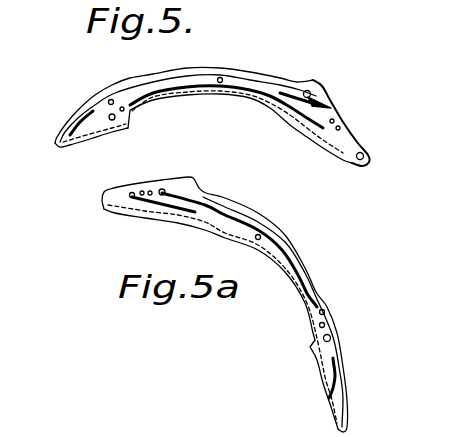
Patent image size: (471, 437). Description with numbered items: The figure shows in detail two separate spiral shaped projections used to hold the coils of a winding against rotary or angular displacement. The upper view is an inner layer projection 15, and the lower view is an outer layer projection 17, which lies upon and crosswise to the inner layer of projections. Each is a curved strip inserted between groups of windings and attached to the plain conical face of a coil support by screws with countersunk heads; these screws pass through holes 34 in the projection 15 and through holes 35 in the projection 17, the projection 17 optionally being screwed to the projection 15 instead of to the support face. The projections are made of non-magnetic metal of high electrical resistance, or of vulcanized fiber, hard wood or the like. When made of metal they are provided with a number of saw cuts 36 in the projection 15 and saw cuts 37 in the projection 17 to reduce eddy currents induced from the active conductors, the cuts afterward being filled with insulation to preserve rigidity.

In FIG. 5, the inner layer spiral shaped projection 15 is at (238, 78).
In FIG. 5A, the outer layer spiral shaped projection 17 is at (289, 257).
In FIG. 5, the holes 34 is at (112, 119).
In FIG. 5A, the holes 35 is at (134, 194).
In FIG. 5, the saw cuts 36 is at (243, 85).
In FIG. 5A, the saw cuts 37 is at (162, 204).